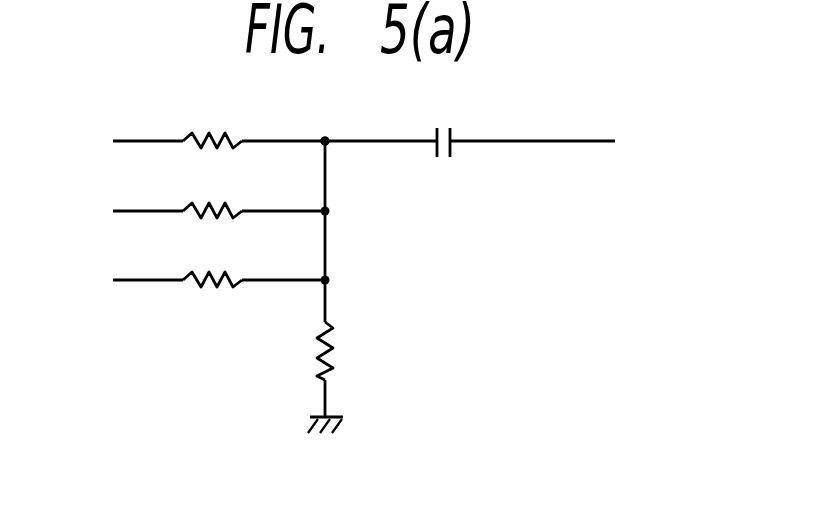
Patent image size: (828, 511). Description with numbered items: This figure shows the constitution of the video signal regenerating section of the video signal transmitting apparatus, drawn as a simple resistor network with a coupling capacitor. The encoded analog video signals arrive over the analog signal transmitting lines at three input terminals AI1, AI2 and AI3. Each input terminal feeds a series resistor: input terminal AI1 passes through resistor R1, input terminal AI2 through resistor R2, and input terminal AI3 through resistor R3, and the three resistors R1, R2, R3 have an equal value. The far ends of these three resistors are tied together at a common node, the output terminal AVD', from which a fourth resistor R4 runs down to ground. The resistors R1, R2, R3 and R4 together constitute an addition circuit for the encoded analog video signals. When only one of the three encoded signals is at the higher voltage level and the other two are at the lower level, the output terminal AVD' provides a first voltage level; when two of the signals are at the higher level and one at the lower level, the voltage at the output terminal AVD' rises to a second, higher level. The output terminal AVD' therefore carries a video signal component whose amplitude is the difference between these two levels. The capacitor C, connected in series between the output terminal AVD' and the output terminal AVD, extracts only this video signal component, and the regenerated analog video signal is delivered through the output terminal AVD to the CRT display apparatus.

The input terminal AI1 is at (117, 141).
The input terminal AI2 is at (117, 211).
The input terminal AI3 is at (117, 280).
The resistor R1 is at (212, 124).
The resistor R2 is at (212, 194).
The resistor R3 is at (212, 261).
The resistor R4 is at (343, 351).
The capacitor C is at (443, 123).
The output terminal AVD is at (562, 142).
The output terminal AVD' is at (366, 179).